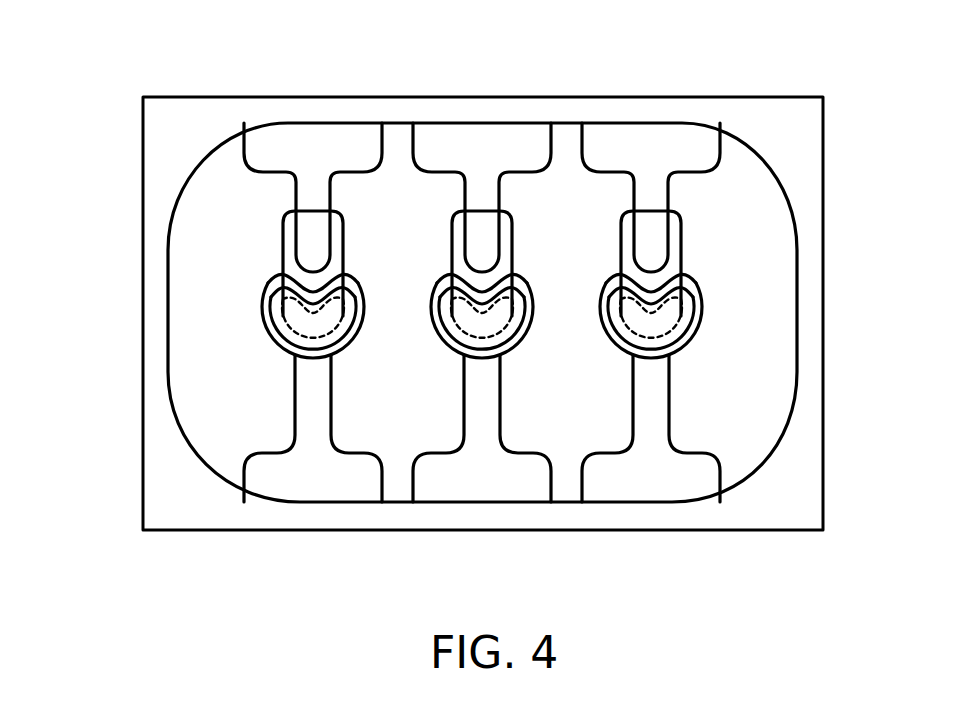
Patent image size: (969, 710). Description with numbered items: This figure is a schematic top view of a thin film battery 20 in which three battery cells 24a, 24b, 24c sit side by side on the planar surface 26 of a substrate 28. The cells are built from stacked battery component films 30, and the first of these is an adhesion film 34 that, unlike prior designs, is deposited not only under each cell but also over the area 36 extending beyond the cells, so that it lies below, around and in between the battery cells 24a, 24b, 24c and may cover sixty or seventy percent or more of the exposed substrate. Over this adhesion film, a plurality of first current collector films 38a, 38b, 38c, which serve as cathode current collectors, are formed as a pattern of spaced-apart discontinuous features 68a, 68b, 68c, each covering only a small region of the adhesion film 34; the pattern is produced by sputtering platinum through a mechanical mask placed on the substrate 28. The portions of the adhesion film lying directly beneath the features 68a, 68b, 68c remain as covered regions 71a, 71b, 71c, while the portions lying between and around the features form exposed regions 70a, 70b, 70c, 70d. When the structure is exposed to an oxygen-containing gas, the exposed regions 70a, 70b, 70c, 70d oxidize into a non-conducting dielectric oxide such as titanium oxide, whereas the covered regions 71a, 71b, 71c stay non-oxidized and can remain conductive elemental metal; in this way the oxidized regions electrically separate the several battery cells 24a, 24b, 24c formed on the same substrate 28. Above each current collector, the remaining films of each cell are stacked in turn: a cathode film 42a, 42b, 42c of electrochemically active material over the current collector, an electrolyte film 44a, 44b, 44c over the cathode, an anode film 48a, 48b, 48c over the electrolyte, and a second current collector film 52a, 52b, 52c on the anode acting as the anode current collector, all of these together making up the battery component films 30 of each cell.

The thin film battery 20 is at (818, 62).
The battery cell 24a is at (363, 270).
The battery cell 24b is at (531, 268).
The battery cell 24c is at (700, 268).
The planar surface 26 is at (800, 512).
The substrate 28 is at (823, 128).
The battery component films 30 is at (685, 370).
The adhesion film 34 is at (766, 297).
The area extending beyond the battery component films 36 is at (737, 445).
The first current collector film 38a is at (302, 486).
The first current collector film 38b is at (478, 486).
The first current collector film 38c is at (683, 486).
The cathode film 42a is at (268, 328).
The cathode film 42b is at (440, 333).
The cathode film 42c is at (688, 348).
The electrolyte film 44a is at (266, 314).
The electrolyte film 44b is at (447, 316).
The electrolyte film 44c is at (692, 328).
The anode film 48a is at (288, 213).
The anode film 48b is at (502, 211).
The anode film 48c is at (682, 211).
The second current collector film 52a is at (318, 148).
The second current collector film 52b is at (484, 148).
The second current collector film 52c is at (652, 148).
The feature 68a is at (272, 362).
The feature 68b is at (448, 371).
The feature 68c is at (615, 372).
The exposed region 70a is at (210, 442).
The exposed region 70b is at (398, 486).
The exposed region 70c is at (568, 486).
The exposed region 70d is at (750, 420).
The covered region 71a is at (270, 283).
The covered region 71b is at (437, 283).
The covered region 71c is at (694, 283).